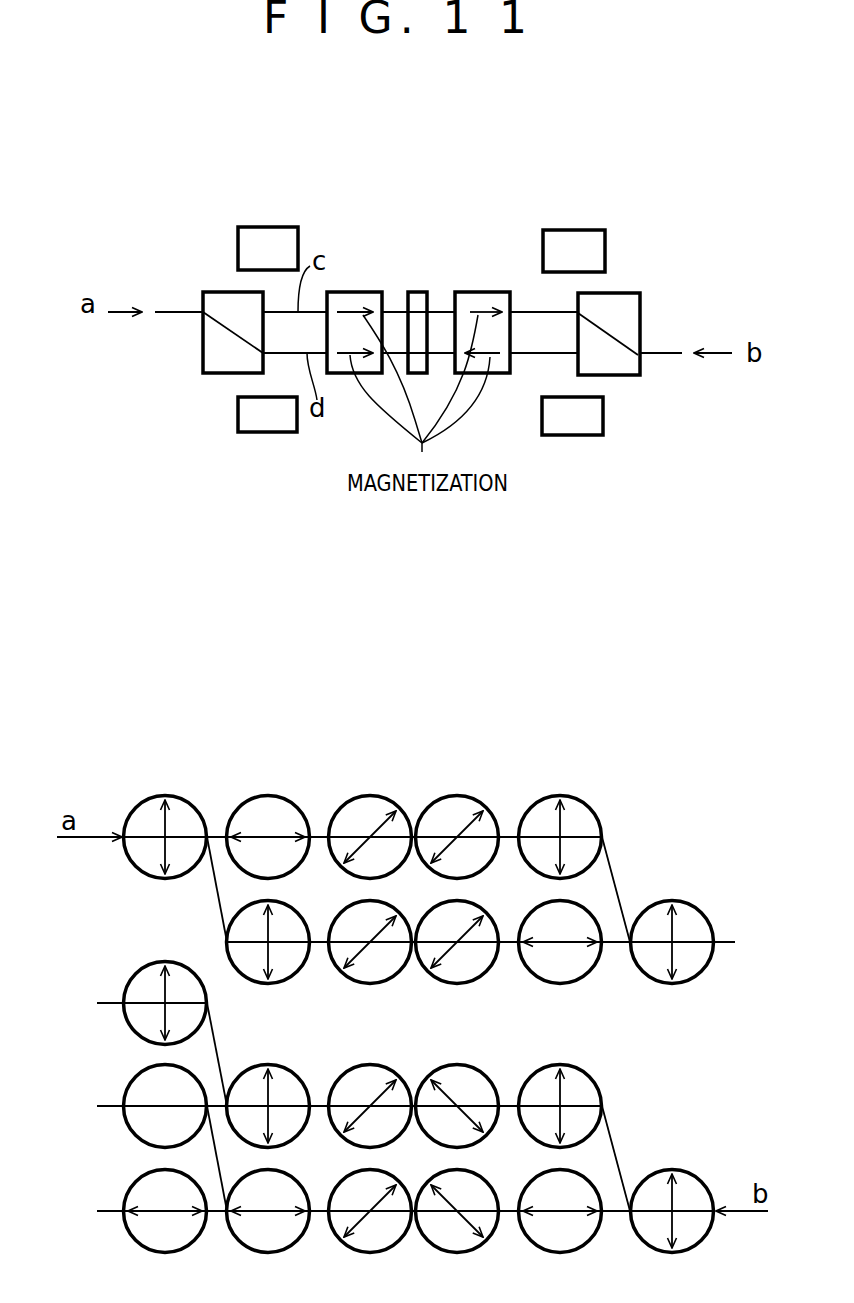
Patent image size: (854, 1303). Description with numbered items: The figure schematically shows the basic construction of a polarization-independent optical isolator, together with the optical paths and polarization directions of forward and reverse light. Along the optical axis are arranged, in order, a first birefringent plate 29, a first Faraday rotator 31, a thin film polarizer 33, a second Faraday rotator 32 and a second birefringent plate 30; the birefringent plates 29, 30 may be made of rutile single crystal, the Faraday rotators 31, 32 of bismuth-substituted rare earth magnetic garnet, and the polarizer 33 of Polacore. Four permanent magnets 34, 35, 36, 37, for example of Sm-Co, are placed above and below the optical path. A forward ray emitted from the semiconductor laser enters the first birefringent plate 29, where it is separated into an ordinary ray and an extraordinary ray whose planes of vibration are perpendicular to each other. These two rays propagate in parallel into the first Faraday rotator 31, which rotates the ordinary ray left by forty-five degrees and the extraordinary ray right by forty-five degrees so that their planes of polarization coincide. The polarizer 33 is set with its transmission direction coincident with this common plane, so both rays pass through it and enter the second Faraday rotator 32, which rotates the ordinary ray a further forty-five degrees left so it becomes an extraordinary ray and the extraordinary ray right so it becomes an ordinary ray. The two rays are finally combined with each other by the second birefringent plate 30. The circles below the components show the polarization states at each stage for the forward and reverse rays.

The first birefringent plate 29 is at (200, 365).
The second birefringent plate 30 is at (618, 293).
The first Faraday rotator 31 is at (355, 292).
The second Faraday rotator 32 is at (483, 292).
The thin film polarizer 33 is at (415, 292).
The permanent magnet 34 is at (263, 227).
The permanent magnet 35 is at (577, 230).
The permanent magnet 36 is at (263, 433).
The permanent magnet 37 is at (577, 437).